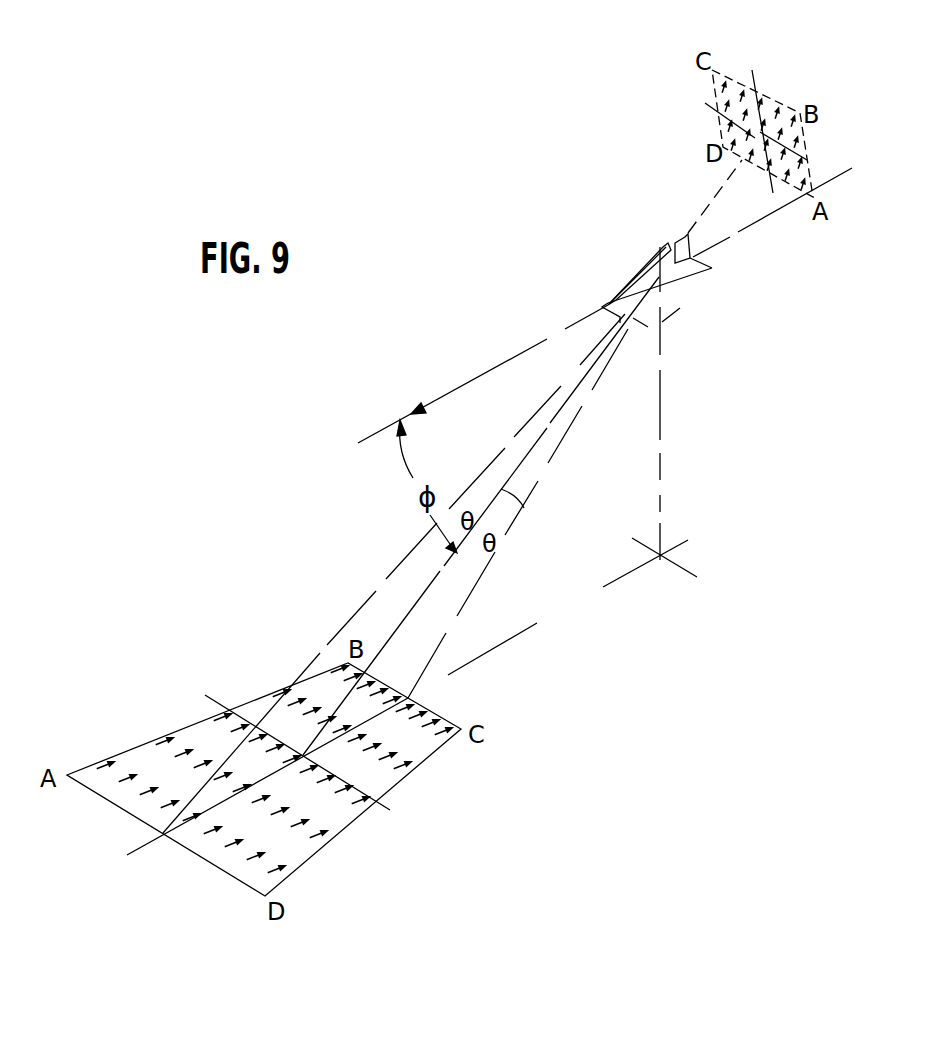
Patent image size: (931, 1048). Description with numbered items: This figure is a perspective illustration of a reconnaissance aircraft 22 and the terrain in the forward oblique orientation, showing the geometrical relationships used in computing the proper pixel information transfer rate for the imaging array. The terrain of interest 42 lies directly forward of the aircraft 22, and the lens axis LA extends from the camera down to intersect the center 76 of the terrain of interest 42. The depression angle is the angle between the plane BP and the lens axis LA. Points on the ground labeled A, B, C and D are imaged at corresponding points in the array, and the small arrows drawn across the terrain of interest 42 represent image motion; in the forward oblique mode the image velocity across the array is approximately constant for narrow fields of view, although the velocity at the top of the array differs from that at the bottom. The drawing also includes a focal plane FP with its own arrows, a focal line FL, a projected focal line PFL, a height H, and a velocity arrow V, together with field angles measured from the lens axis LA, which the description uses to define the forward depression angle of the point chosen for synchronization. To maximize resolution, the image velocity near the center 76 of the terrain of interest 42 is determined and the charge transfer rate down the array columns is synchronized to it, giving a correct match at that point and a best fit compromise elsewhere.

The aircraft 22 is at (632, 278).
The terrain of interest 42 is at (327, 843).
The center of the terrain of interest 76 is at (303, 755).
The focal plane FP is at (763, 87).
The plane BP is at (691, 289).
The focal line FL is at (510, 358).
The lens axis LA is at (528, 530).
The projected focal line PFL is at (592, 593).
The height H is at (664, 412).
The direction vector V is at (414, 396).